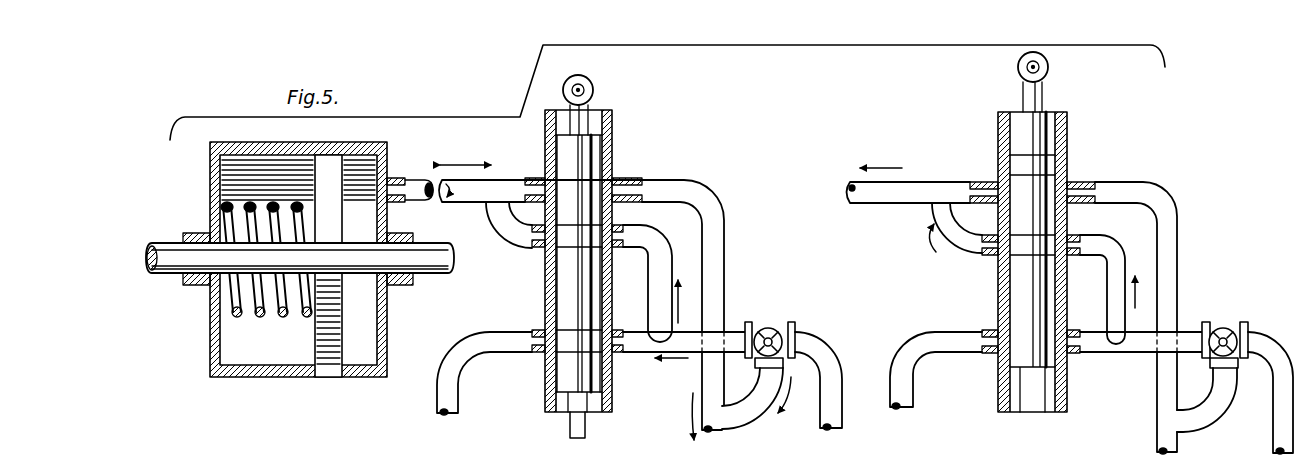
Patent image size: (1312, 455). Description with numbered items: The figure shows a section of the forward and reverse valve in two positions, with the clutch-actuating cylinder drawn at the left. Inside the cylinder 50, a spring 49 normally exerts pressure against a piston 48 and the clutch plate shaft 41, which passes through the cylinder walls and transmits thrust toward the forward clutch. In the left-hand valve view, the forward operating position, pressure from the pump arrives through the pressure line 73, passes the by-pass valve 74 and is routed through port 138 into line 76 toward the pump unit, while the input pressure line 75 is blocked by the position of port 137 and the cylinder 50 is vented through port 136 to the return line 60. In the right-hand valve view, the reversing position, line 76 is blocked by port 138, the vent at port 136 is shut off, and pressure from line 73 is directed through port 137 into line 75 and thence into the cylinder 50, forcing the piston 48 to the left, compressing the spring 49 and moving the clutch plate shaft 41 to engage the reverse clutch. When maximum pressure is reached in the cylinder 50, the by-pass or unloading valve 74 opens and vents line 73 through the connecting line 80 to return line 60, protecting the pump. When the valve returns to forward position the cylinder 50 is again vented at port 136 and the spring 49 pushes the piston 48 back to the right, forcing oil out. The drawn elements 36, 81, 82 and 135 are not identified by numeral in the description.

The conduit 36 is at (1117, 194).
The clutch plate shaft 41 is at (180, 252).
The piston 48 is at (329, 366).
The spring 49 is at (264, 317).
The cylinder 50 is at (252, 143).
The return line 60 is at (712, 372).
The pressure line 73 is at (830, 385).
The by-pass valve 74 is at (771, 327).
The line 75 is at (427, 175).
The line 76 is at (457, 352).
The connecting line 80 is at (742, 412).
The eye 81 is at (593, 86).
The cylinder 82 is at (609, 160).
The casing 135 is at (211, 313).
The port 136 is at (545, 178).
The port 137 is at (557, 255).
The port 138 is at (556, 350).